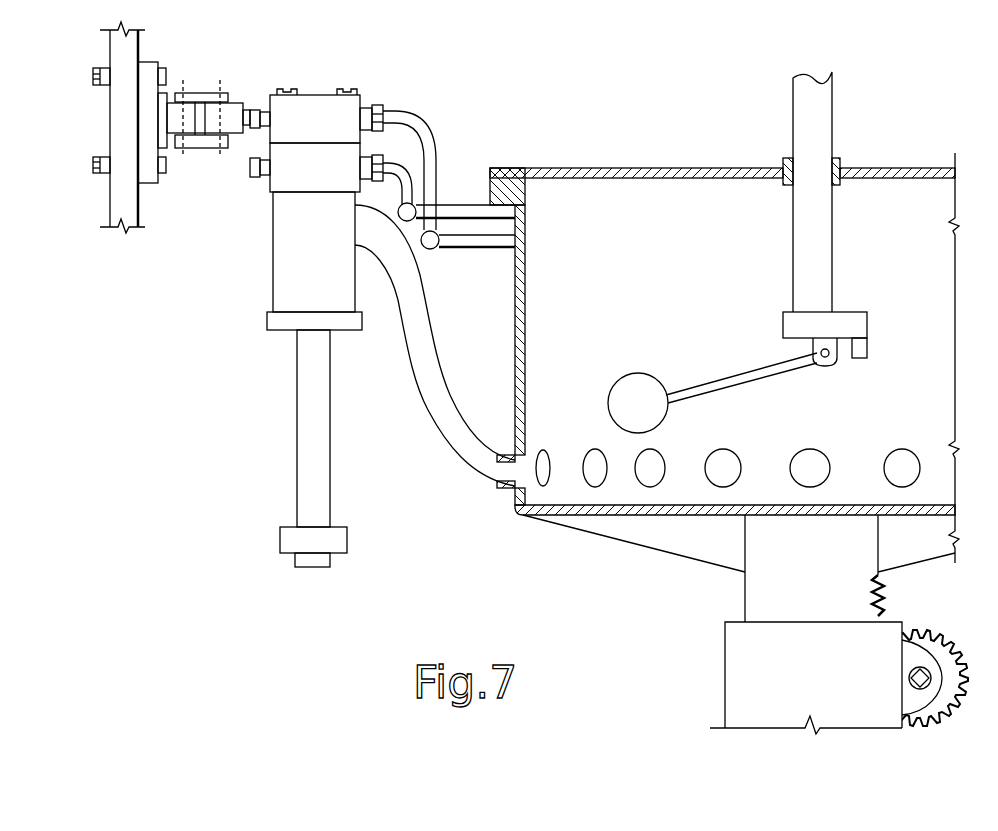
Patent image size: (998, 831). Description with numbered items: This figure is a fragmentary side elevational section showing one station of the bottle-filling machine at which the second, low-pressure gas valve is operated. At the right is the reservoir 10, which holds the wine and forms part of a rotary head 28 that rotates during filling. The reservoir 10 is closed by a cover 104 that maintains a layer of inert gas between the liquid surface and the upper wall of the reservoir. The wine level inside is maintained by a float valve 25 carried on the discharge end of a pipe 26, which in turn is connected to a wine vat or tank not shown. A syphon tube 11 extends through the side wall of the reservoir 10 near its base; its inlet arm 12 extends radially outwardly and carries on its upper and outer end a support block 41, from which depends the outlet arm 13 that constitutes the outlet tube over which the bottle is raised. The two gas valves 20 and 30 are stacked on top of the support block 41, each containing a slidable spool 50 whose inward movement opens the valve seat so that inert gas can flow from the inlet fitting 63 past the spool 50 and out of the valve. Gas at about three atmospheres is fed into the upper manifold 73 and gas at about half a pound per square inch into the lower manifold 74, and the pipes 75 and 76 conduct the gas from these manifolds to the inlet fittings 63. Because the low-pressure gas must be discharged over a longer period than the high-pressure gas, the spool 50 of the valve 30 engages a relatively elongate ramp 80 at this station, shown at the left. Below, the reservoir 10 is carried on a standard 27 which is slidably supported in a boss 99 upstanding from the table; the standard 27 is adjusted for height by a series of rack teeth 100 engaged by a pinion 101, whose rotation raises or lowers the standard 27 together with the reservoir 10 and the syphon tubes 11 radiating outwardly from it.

The reservoir 10 is at (566, 383).
The syphon tube 11 is at (430, 336).
The inlet arm 12 is at (465, 462).
The outlet arm 13 is at (300, 414).
The valve 20 is at (332, 156).
The float valve 25 is at (855, 324).
The pipe 26 is at (818, 226).
The standard 27 is at (752, 582).
The rotary head 28 is at (484, 544).
The valve 30 is at (308, 100).
The support block 41 is at (283, 221).
The slidable spool 50 is at (250, 124).
The inlet fitting 63 is at (371, 129).
The upper manifold 73 is at (440, 208).
The lower manifold 74 is at (450, 240).
The pipe 75 is at (400, 174).
The pipe 76 is at (400, 115).
The elongate ramp 80 is at (225, 113).
The boss 99 is at (737, 665).
The rack teeth 100 is at (885, 611).
The pinion 101 is at (935, 652).
The cover 104 is at (577, 171).